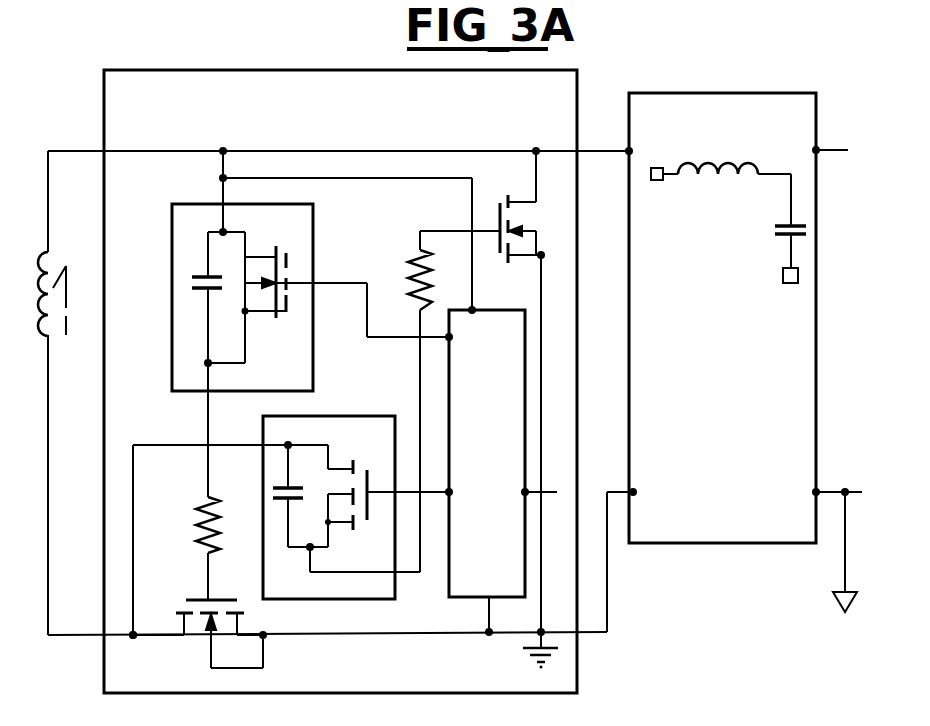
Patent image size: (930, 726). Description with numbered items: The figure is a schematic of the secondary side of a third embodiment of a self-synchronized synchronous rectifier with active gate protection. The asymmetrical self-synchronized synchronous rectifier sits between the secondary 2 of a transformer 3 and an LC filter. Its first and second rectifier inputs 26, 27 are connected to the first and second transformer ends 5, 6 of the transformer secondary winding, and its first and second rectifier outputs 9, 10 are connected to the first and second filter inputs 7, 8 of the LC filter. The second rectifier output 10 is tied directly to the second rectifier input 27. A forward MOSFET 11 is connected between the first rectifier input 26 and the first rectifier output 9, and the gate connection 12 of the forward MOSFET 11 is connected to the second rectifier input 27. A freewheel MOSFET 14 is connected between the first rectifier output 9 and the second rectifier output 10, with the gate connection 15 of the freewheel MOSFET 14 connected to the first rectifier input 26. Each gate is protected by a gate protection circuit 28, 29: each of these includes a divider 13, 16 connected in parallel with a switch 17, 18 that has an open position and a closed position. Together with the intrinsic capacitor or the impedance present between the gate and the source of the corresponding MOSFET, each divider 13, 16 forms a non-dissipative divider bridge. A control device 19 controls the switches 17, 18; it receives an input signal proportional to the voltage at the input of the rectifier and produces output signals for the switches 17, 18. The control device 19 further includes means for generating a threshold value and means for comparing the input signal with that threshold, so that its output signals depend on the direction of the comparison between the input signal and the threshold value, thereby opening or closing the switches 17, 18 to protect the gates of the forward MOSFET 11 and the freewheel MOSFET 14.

The secondary 2 is at (48, 252).
The transformer 3 is at (36, 296).
The first transformer end 5 is at (154, 659).
The first rectifier input 26 is at (133, 639).
The second transformer end 6 is at (255, 169).
The second rectifier input 27 is at (223, 151).
The first filter input 7 is at (577, 665).
The first rectifier output 9 is at (546, 634).
The second filter input 8 is at (506, 154).
The second rectifier output 10 is at (536, 151).
The forward MOSFET 11 is at (197, 600).
The gate connection 12 is at (206, 416).
The divider 13 is at (197, 290).
The freewheel MOSFET 14 is at (500, 212).
The gate connection 15 is at (455, 233).
The divider 16 is at (282, 486).
The switch 17 is at (292, 267).
The switch 18 is at (375, 475).
The control device 19 is at (458, 600).
The gate protection circuit 28 is at (172, 242).
The gate protection circuit 29 is at (357, 416).